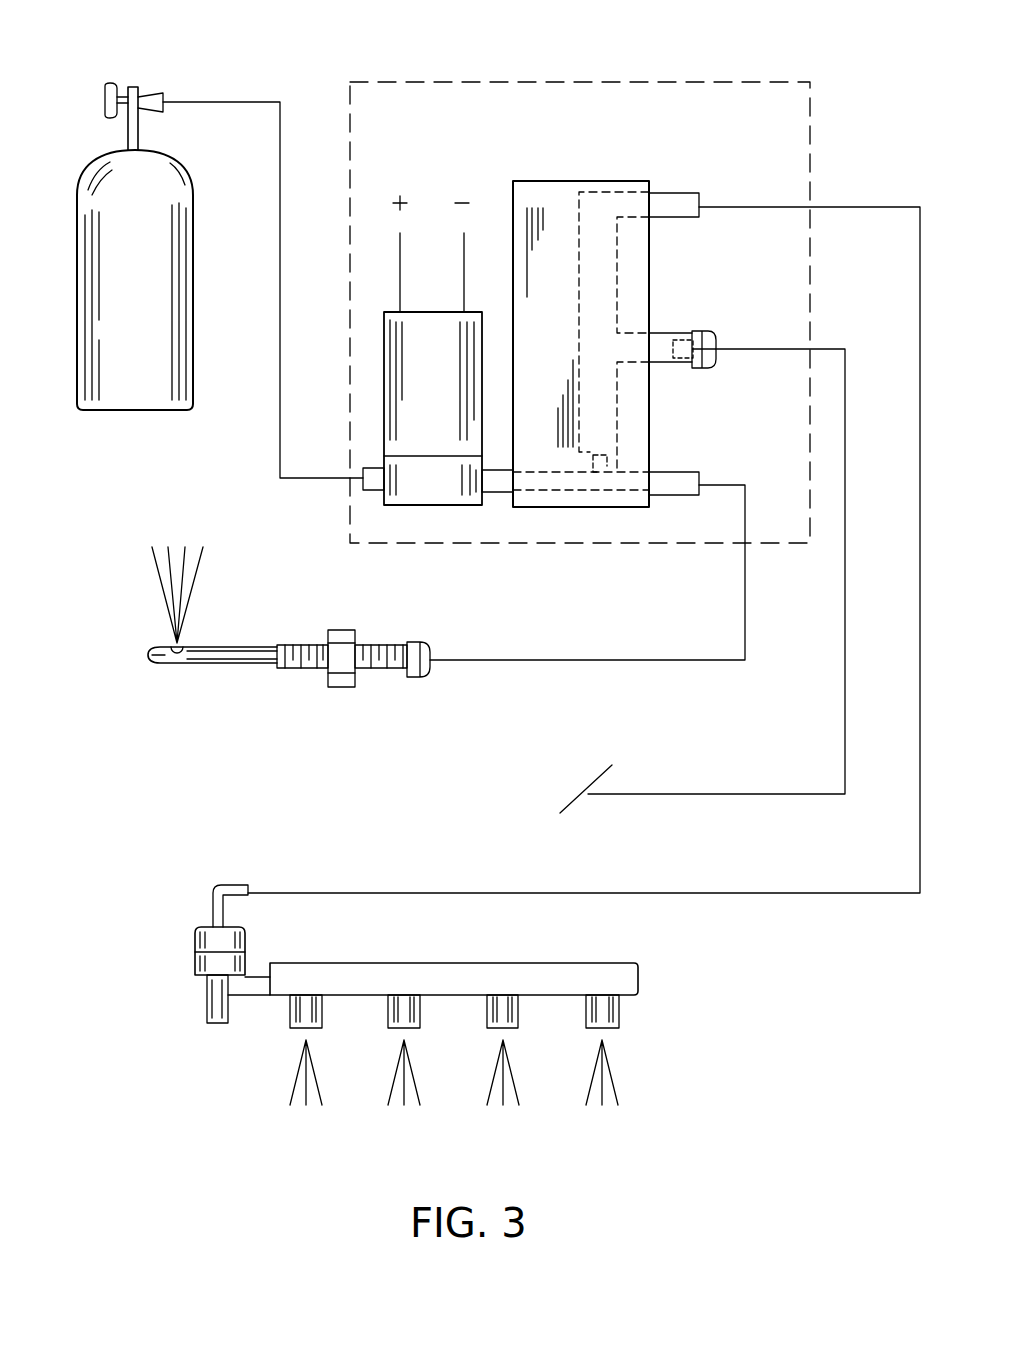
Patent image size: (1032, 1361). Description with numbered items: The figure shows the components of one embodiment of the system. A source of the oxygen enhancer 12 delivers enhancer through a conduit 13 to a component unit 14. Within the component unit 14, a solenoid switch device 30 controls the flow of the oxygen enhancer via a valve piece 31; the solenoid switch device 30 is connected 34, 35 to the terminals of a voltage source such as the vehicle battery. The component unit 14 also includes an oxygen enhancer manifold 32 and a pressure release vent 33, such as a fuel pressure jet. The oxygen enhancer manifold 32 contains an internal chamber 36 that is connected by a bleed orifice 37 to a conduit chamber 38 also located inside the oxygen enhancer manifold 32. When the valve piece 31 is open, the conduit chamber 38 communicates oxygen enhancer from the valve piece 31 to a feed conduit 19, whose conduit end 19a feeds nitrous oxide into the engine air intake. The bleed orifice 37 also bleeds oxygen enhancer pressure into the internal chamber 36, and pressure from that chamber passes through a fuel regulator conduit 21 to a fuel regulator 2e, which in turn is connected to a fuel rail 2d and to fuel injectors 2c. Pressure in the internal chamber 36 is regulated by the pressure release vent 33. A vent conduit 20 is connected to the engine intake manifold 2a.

The source of the oxygen enhancer 12 is at (123, 398).
The conduit 13 is at (215, 100).
The component unit 14 is at (522, 82).
The feed conduit 19 is at (683, 662).
The conduit end 19a is at (305, 645).
The vent conduit 20 is at (845, 752).
The fuel regulator conduit 21 is at (855, 894).
The engine intake manifold 2a is at (595, 780).
The fuel injectors 2c is at (603, 1017).
The fuel rail 2d is at (622, 975).
The fuel regulator 2e is at (213, 940).
The solenoid switch device 30 is at (420, 372).
The valve piece 31 is at (420, 484).
The oxygen enhancer manifold 32 is at (649, 255).
The pressure release vent 33 is at (688, 333).
The connection to voltage source terminal 34 is at (400, 260).
The connection to voltage source terminal 35 is at (465, 258).
The internal chamber 36 is at (600, 205).
The bleed orifice 37 is at (607, 463).
The conduit chamber 38 is at (572, 477).